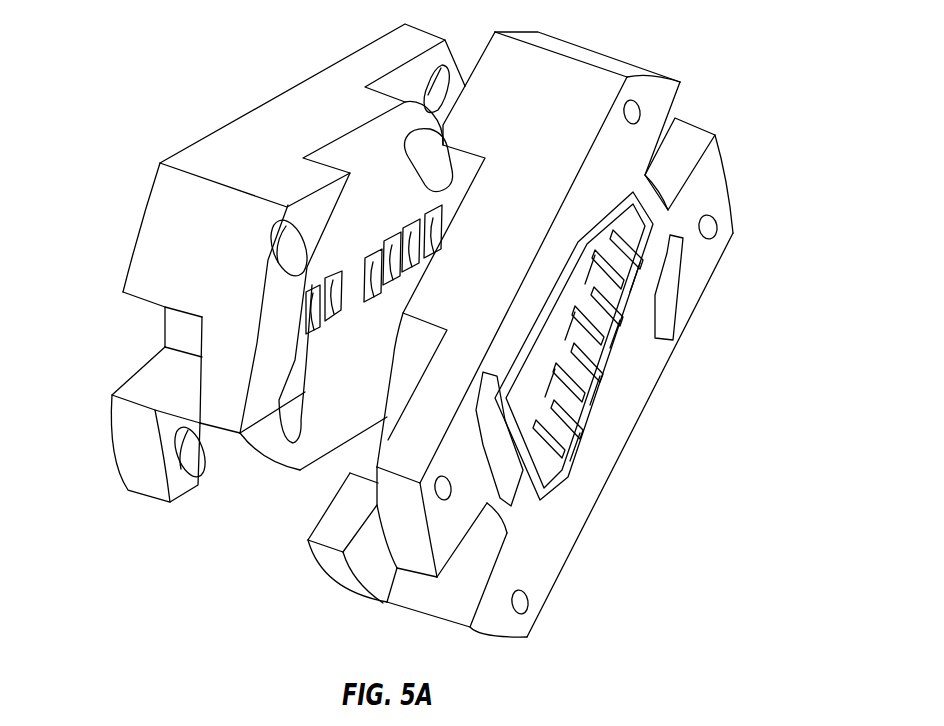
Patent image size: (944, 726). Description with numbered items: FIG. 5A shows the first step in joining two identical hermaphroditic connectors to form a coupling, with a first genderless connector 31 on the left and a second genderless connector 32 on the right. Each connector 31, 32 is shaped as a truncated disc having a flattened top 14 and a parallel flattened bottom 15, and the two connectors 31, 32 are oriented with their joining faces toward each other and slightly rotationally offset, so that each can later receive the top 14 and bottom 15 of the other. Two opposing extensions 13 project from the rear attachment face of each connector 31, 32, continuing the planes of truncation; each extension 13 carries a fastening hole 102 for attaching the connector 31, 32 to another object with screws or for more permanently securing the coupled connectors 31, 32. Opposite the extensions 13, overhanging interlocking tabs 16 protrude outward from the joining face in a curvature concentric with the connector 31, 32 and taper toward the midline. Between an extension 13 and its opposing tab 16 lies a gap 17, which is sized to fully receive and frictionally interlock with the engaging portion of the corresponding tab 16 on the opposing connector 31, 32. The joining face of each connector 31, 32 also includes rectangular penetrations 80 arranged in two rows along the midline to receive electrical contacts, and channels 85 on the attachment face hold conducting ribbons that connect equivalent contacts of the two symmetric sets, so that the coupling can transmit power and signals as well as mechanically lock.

The extension 13 is at (110, 426).
The top edge 14 is at (428, 330).
The bottom edge 15 is at (650, 400).
The overhanging interlocking tab 16 is at (267, 397).
The gap 17 is at (688, 133).
The first genderless connector 31 is at (248, 110).
The second genderless connector 32 is at (665, 74).
The penetration 80 is at (300, 470).
The channel 85 is at (557, 482).
The fastening hole 102 is at (716, 226).